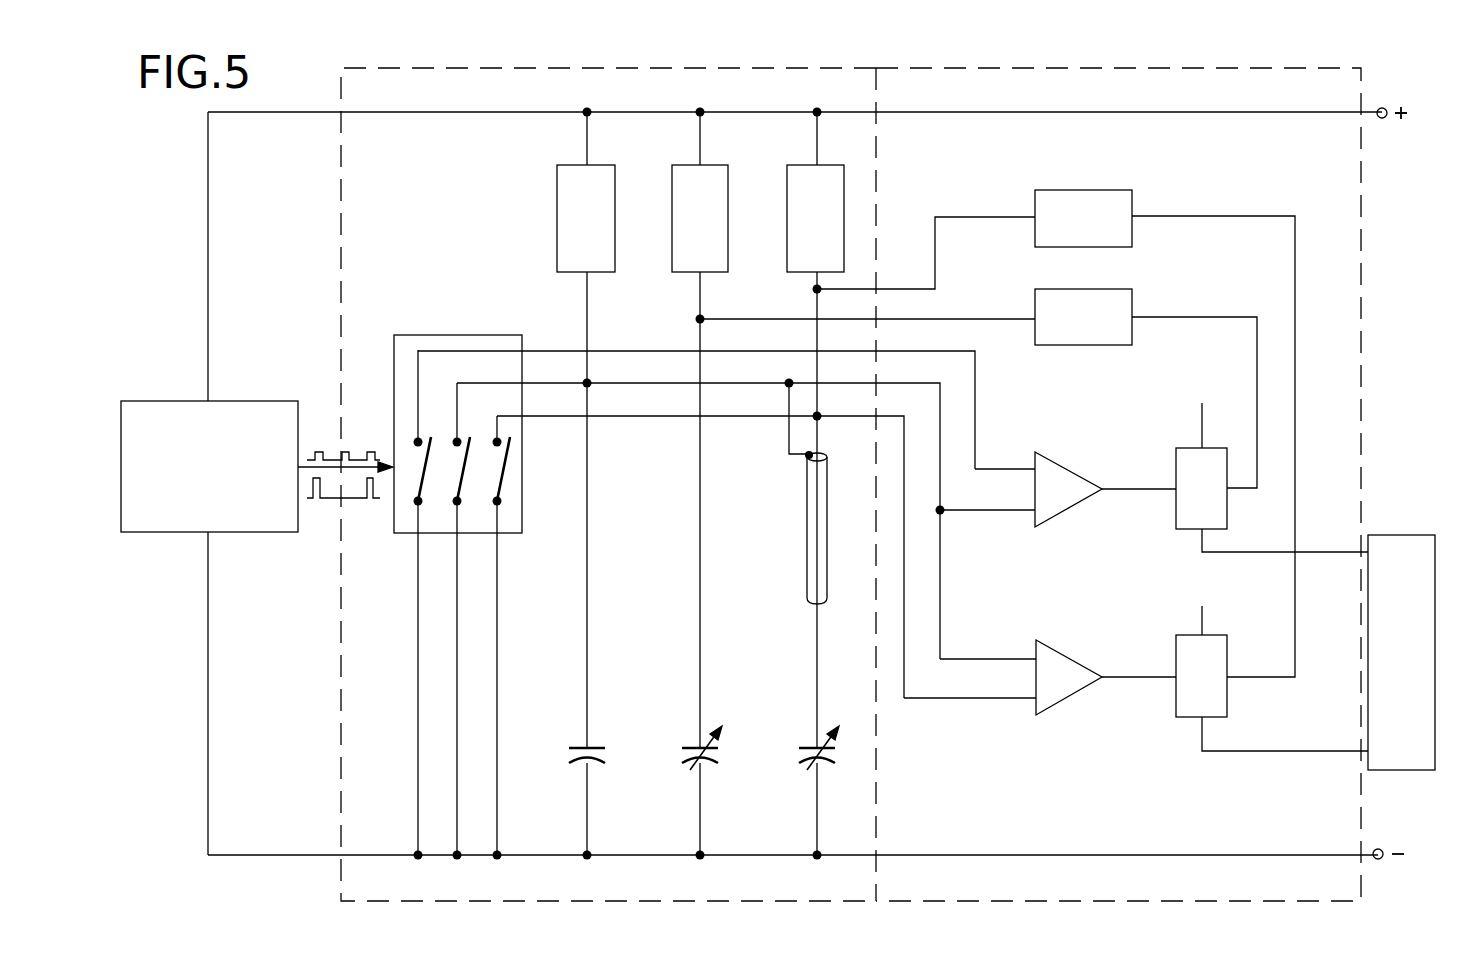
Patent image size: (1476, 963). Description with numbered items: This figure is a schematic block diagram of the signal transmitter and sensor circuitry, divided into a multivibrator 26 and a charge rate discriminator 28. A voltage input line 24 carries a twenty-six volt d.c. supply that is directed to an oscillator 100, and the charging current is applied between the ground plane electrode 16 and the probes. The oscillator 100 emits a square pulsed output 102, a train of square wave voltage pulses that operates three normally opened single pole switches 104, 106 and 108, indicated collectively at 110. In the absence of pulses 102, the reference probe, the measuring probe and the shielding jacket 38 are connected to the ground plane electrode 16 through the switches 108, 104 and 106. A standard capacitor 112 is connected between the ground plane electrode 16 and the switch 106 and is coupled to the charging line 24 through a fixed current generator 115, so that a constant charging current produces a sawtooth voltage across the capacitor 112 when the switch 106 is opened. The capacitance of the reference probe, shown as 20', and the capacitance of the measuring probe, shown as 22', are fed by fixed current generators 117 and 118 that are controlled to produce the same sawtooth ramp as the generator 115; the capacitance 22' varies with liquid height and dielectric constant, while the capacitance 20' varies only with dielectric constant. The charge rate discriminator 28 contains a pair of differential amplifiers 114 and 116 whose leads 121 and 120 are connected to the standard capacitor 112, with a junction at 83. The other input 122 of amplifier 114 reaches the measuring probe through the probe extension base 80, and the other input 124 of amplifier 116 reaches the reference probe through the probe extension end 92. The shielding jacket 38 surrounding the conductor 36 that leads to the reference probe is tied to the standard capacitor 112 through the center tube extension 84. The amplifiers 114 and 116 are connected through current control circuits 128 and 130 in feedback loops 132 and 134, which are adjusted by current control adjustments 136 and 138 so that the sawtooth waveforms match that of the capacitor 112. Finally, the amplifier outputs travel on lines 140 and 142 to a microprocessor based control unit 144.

The oscillator 100 is at (209, 466).
The square pulsed output 102 is at (338, 451).
The single pole switch 104 is at (436, 438).
The single pole switch 106 is at (478, 435).
The single pole switch 108 is at (508, 460).
The switches 110 is at (436, 335).
The standard capacitor 112 is at (592, 747).
The differential amplifier 114 is at (1070, 476).
The fixed current generator 115 is at (586, 428).
The differential amplifier 116 is at (1052, 700).
The fixed current generator 117 is at (815, 281).
The fixed current generator 118 is at (700, 428).
The lead 120 is at (990, 658).
The lead 121 is at (990, 509).
The input 122 is at (1004, 468).
The input 124 is at (982, 700).
The current control circuit 128 is at (1170, 452).
The current control circuit 130 is at (1180, 720).
The feedback loop 132 is at (1170, 320).
The feedback loop 134 is at (1175, 222).
The current control adjustment 136 is at (914, 317).
The current control adjustment 138 is at (973, 242).
The line 140 is at (1362, 548).
The line 142 is at (1364, 758).
The control unit 144 is at (1401, 652).
The probe extension base 80 is at (698, 350).
The junction node 83 is at (944, 512).
The center tube extension 84 is at (788, 380).
The probe extension end 92 is at (822, 418).
The shielding jacket 38 is at (807, 494).
The conductor 36 is at (816, 664).
The capacitance of the measuring probe 22' is at (719, 793).
The capacitance of the reference probe 20' is at (834, 793).
The voltage input line 24 is at (1384, 108).
The ground plane electrode 16 is at (1060, 853).
The multivibrator 26 is at (630, 901).
The charge rate discriminator 28 is at (1082, 901).